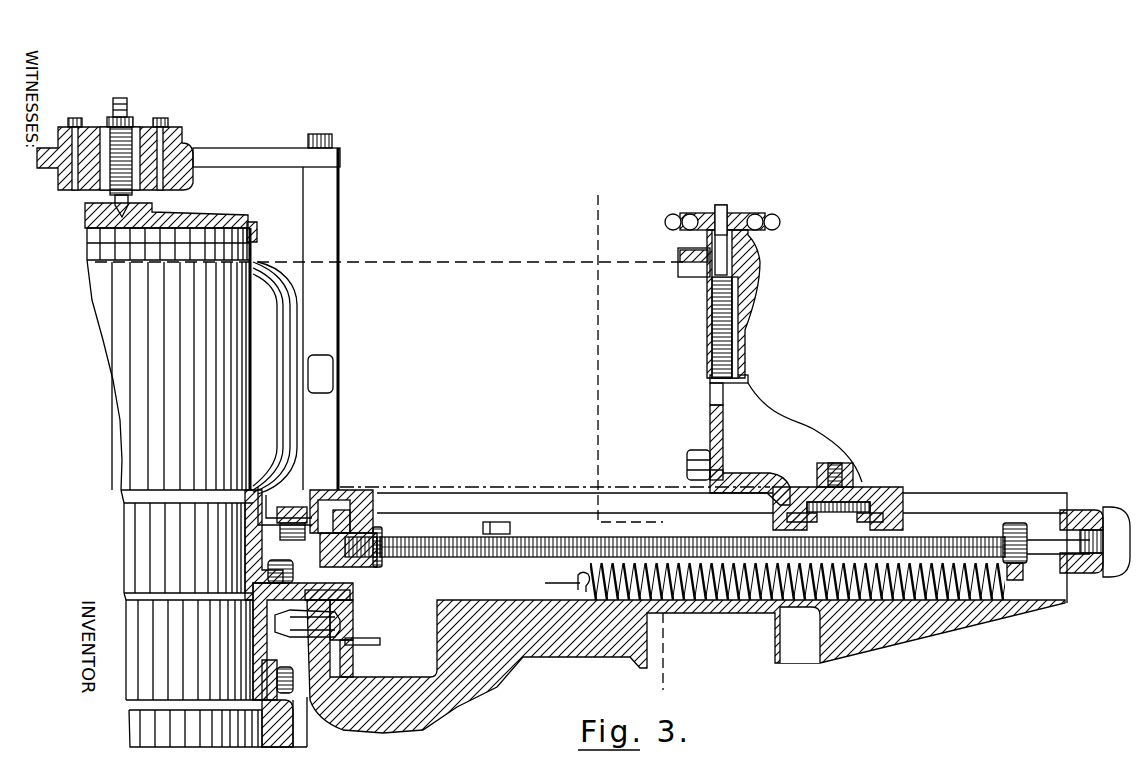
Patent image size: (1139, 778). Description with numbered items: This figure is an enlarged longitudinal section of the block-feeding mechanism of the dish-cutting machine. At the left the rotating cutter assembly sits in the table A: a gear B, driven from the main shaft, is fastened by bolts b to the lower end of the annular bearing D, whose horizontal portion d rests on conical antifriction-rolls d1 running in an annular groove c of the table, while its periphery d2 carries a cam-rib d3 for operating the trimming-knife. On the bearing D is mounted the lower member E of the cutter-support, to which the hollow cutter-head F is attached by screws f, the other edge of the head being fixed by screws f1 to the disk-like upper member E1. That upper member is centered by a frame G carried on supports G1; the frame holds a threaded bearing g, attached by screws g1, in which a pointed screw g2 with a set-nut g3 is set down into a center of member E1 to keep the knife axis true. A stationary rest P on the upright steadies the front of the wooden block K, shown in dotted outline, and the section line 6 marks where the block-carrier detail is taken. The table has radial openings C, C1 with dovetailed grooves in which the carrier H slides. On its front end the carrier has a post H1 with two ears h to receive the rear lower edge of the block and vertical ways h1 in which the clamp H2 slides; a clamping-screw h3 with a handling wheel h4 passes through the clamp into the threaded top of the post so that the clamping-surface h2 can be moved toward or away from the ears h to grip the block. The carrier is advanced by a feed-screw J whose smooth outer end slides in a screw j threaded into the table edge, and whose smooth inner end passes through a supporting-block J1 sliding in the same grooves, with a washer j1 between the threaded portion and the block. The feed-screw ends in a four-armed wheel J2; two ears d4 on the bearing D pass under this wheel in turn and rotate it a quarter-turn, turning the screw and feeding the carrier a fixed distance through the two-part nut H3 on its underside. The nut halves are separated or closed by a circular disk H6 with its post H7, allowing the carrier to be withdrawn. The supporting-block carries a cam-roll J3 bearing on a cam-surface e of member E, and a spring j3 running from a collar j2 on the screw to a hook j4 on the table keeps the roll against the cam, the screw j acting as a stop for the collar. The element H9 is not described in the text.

The bearing g is at (78, 122).
The screws g1 is at (168, 124).
The screw g2 is at (133, 125).
The set-nut g3 is at (128, 128).
The frame G is at (266, 146).
The supports G1 is at (332, 319).
The member of cutter-support E1 is at (166, 205).
The screws f1 is at (257, 232).
The cutter-head F is at (192, 365).
The stationary rest P is at (322, 375).
The wooden block K is at (555, 414).
The section line 6 is at (390, 438).
The handling wheel h4 is at (690, 212).
The clamping-screw h3 is at (722, 205).
The clamp H2 is at (760, 265).
The clamping-surface h2 is at (680, 258).
The vertical ways h1 is at (748, 302).
The post H1 is at (748, 382).
The ears h is at (686, 462).
The arm H9 is at (808, 488).
The post H7 is at (848, 465).
The circular disk H6 is at (852, 502).
The carrier H is at (900, 497).
The feed-screw J is at (935, 533).
The collar j2 is at (1015, 522).
The radial opening C1 is at (1068, 508).
The screw j is at (1105, 552).
The cam-roll J3 is at (295, 507).
The four-armed wheel J2 is at (352, 490).
The supporting-block J1 is at (378, 500).
The washer j1 is at (385, 527).
The screws f is at (258, 508).
The cam-surface e is at (245, 530).
The member of cutter-support E is at (238, 572).
The horizontal portion d is at (303, 630).
The ears d4 is at (350, 590).
The antifriction-rolls d1 is at (345, 614).
The periphery d2 is at (355, 626).
The cam-rib d3 is at (380, 641).
The annular groove c is at (346, 652).
The annular bearing D is at (205, 630).
The bolts b is at (270, 680).
The gear B is at (240, 742).
The table A is at (400, 735).
The hook j4 is at (561, 581).
The radial opening C is at (540, 658).
The nut H3 is at (842, 660).
The spring j3 is at (940, 618).